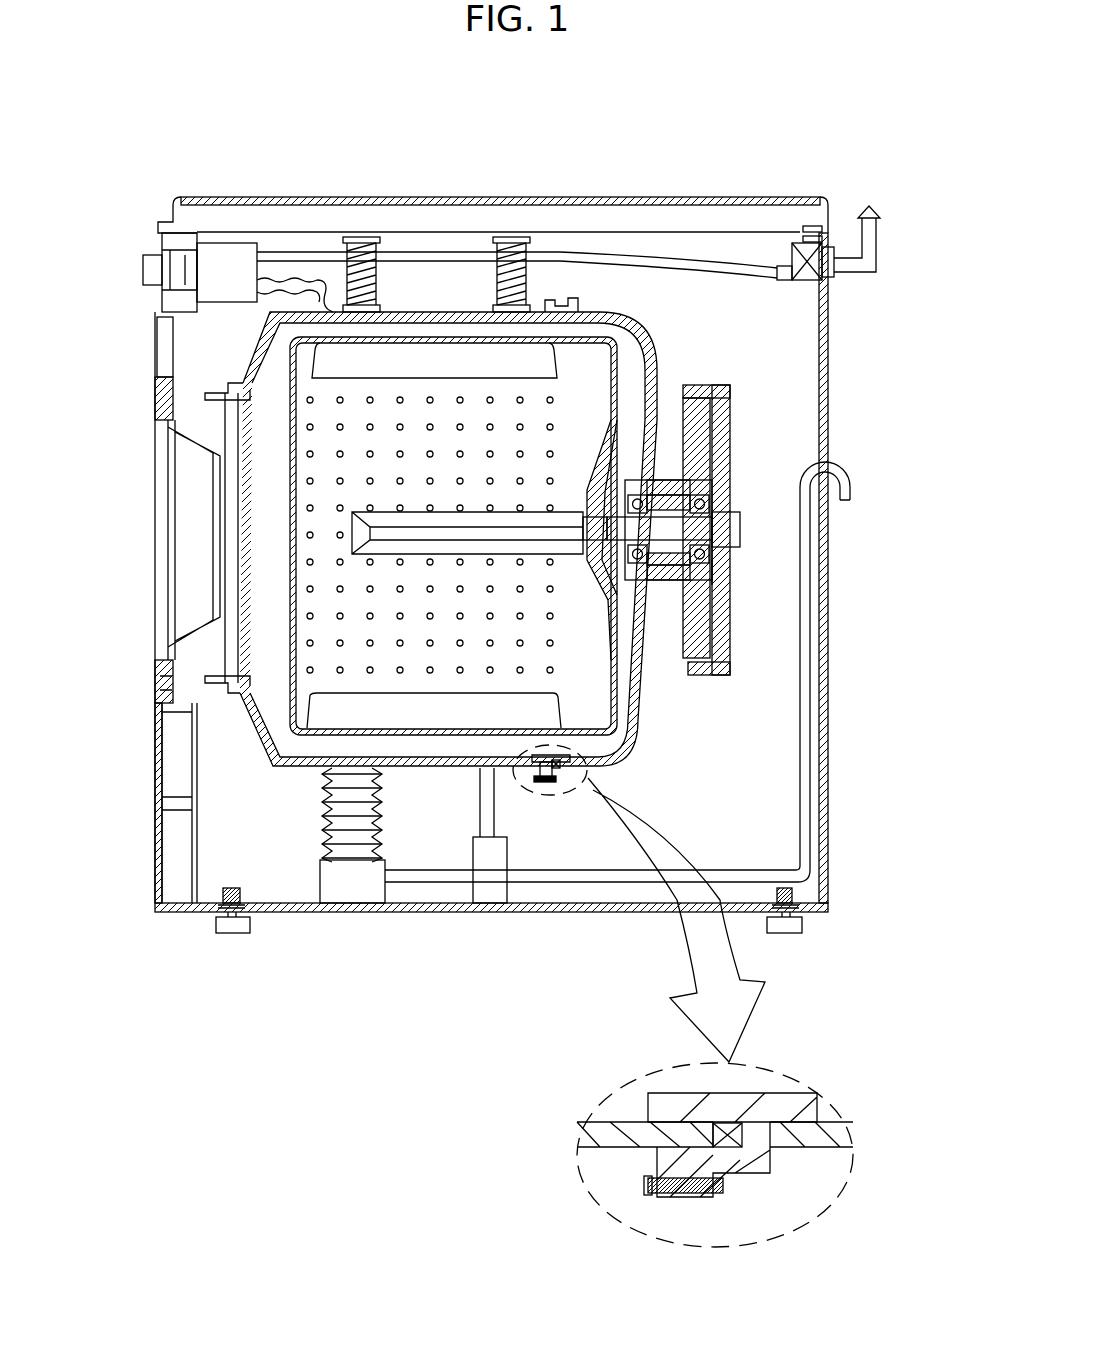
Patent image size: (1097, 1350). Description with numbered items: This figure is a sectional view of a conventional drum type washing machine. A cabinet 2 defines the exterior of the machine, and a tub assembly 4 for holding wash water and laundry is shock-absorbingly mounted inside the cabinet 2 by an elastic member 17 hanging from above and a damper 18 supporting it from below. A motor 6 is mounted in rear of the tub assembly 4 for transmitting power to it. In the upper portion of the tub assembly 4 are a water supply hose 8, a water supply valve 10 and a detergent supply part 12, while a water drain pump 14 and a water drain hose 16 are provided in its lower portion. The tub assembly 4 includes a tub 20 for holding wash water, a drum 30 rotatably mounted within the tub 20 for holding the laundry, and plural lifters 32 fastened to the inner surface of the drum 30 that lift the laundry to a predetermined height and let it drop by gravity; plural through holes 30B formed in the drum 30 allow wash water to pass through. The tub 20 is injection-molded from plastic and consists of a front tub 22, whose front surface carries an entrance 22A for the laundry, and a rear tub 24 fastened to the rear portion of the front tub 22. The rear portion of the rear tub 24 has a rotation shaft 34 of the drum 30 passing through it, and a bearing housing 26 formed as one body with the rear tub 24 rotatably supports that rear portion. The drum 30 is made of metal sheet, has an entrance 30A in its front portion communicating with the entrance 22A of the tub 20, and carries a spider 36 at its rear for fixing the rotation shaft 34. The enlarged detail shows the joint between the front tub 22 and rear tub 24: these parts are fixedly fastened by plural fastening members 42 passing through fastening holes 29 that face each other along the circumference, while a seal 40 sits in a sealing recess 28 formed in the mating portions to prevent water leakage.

The cabinet 2 is at (830, 802).
The tub assembly 4 is at (660, 350).
The motor 6 is at (728, 390).
The water supply hose 8 is at (692, 268).
The water supply valve 10 is at (790, 255).
The detergent supply part 12 is at (232, 262).
The water drain pump 14 is at (415, 872).
The water drain hose 16 is at (352, 876).
The elastic member 17 is at (352, 238).
The damper 18 is at (490, 887).
The tub 20 is at (657, 977).
The front tub 22 is at (540, 782).
The entrance 22A is at (178, 683).
The rear tub 24 is at (585, 760).
The bearing housing 26 is at (714, 572).
The sealing recess 28 is at (733, 1137).
The fastening holes 29 is at (690, 1190).
The drum 30 is at (613, 677).
The entrance 30A is at (240, 511).
The through holes 30B is at (556, 642).
The lifters 32 is at (412, 373).
The rotation shaft 34 is at (740, 530).
The spider 36 is at (647, 483).
The seal 40 is at (740, 1137).
The fastening members 42 is at (647, 1187).